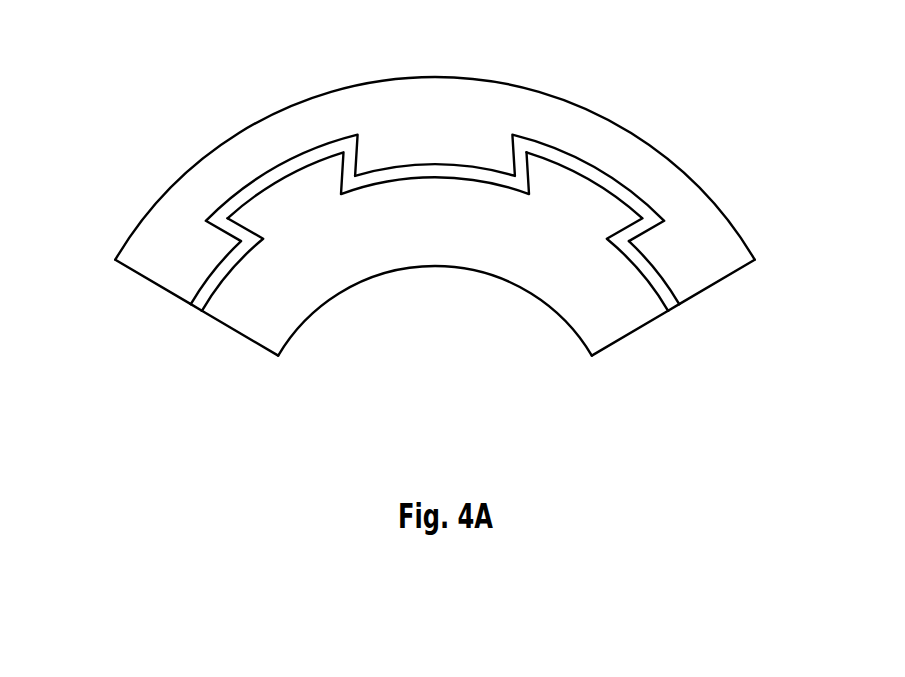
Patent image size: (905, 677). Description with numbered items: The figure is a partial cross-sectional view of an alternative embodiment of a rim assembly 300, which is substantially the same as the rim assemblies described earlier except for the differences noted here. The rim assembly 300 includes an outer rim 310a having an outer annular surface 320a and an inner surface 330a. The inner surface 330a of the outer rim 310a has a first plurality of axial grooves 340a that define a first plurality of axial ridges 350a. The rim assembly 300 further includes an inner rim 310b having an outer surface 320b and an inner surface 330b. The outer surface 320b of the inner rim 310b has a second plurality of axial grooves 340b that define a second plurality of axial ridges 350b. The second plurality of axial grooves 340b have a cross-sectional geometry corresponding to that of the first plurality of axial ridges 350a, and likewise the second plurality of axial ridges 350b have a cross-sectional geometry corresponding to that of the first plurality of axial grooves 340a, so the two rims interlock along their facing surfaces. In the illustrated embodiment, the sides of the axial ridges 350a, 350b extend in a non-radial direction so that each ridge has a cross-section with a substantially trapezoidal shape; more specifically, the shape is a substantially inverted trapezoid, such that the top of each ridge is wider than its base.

The rim assembly 300 is at (434, 213).
The outer rim 310a is at (434, 166).
The inner rim 310b is at (435, 275).
The outer annular surface 320a is at (573, 103).
The outer surface 320b is at (253, 252).
The inner surface 330a is at (638, 196).
The inner surface 330b is at (557, 313).
The first plurality of axial grooves 340a is at (308, 150).
The second plurality of axial grooves 340b is at (510, 188).
The first plurality of axial ridges 350a is at (455, 165).
The second plurality of axial ridges 350b is at (593, 183).